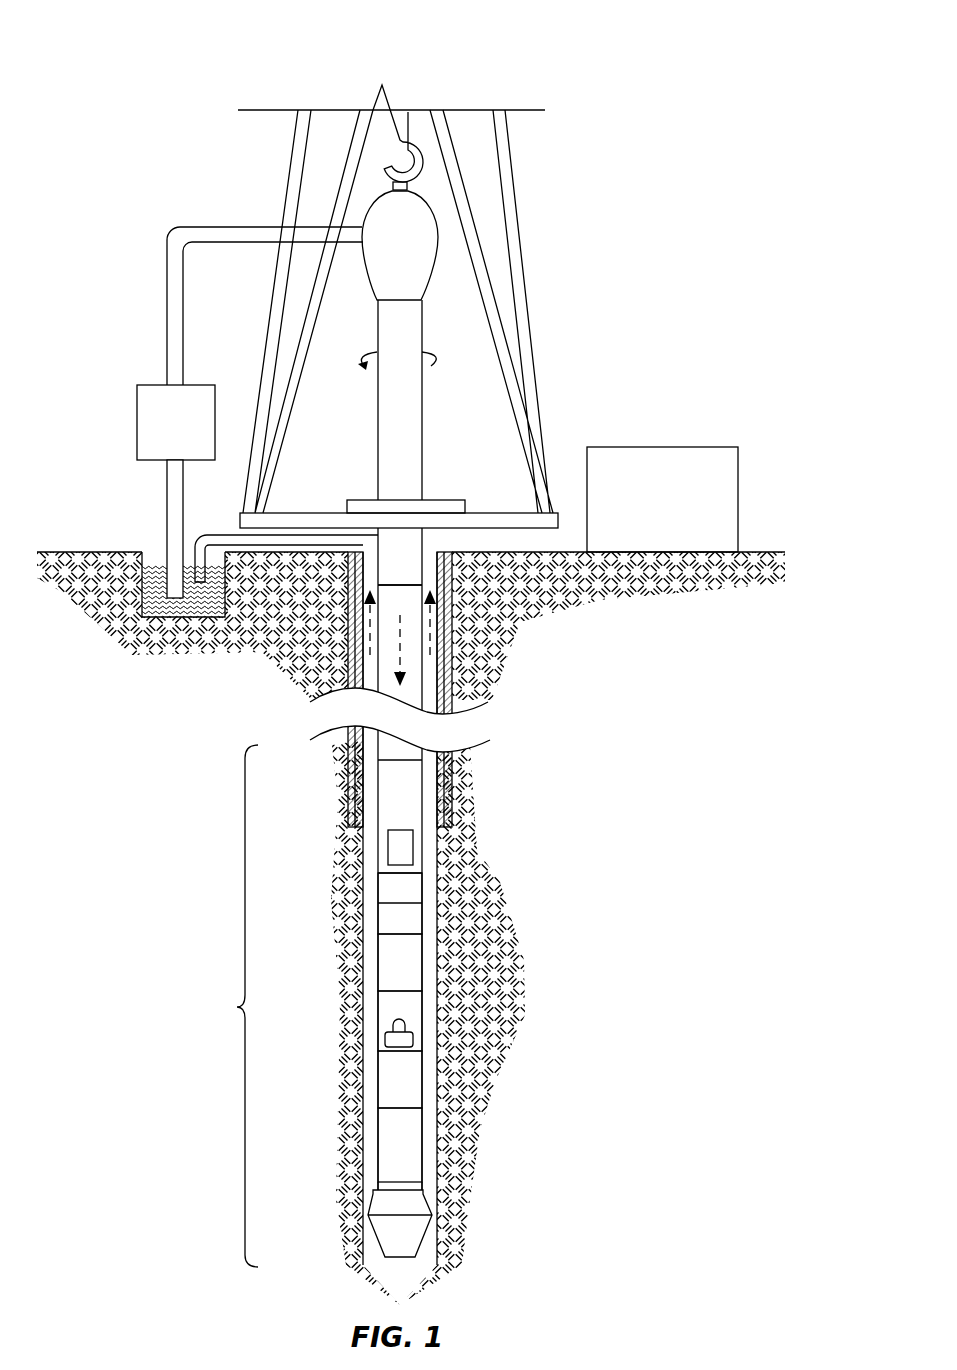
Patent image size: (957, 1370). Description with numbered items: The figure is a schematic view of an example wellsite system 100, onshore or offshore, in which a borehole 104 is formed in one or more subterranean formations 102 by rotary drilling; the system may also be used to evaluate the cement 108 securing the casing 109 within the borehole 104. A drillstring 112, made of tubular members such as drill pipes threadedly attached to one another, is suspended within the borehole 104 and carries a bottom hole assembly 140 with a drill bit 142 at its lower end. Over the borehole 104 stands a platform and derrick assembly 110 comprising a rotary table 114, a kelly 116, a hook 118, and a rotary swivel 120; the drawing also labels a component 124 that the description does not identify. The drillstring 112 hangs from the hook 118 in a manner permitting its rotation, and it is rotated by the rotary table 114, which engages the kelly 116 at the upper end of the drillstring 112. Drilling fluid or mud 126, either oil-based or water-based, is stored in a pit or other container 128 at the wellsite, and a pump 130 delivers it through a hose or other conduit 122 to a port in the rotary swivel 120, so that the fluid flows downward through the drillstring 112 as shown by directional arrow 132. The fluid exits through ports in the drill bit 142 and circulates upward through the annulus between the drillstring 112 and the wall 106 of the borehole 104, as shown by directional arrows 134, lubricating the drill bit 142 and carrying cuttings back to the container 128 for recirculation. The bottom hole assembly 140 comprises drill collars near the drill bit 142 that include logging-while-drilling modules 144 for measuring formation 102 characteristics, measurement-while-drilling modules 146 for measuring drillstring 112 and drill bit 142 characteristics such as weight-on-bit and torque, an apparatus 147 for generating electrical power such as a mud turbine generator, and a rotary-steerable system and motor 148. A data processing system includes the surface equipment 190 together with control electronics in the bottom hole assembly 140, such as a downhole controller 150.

The wellsite system 100 is at (116, 63).
The subterranean formation 102 is at (452, 1013).
The borehole 104 is at (437, 692).
The wall of the borehole 106 is at (456, 859).
The cement 108 is at (352, 800).
The casing 109 is at (445, 805).
The platform and derrick assembly 110 is at (570, 267).
The drillstring 112 is at (399, 572).
The rotary table 114 is at (435, 498).
The kelly 116 is at (378, 430).
The hook 118 is at (408, 112).
The rotary swivel 120 is at (362, 266).
The hose or other conduit 122 is at (167, 333).
The drilling platform 124 is at (503, 512).
The drilling fluid or mud 126 is at (154, 606).
The pit or other container 128 is at (155, 548).
The pump 130 is at (137, 422).
The directional arrow 132 is at (397, 660).
The directional arrows 134 is at (368, 618).
The bottom hole assembly 140 is at (375, 1006).
The drill bit 142 is at (388, 1232).
The logging-while-drilling module 144 is at (392, 903).
The measurement-while-drilling module 146 is at (392, 1005).
The apparatus for generating electrical power 147 is at (413, 1038).
The rotary-steerable system and motor 148 is at (395, 1133).
The downhole controller 150 is at (413, 848).
The surface equipment 190 is at (662, 447).